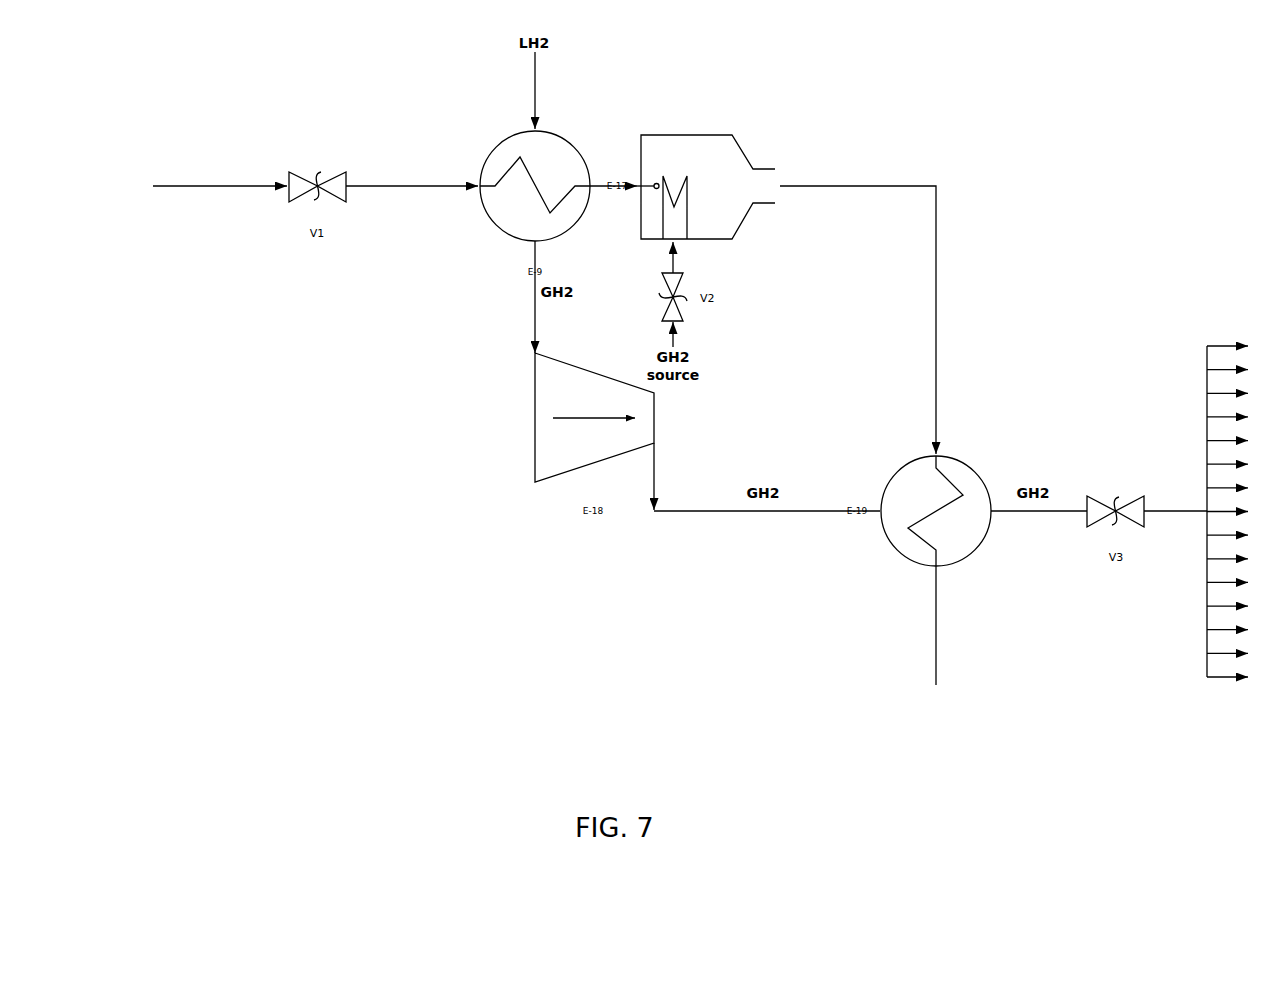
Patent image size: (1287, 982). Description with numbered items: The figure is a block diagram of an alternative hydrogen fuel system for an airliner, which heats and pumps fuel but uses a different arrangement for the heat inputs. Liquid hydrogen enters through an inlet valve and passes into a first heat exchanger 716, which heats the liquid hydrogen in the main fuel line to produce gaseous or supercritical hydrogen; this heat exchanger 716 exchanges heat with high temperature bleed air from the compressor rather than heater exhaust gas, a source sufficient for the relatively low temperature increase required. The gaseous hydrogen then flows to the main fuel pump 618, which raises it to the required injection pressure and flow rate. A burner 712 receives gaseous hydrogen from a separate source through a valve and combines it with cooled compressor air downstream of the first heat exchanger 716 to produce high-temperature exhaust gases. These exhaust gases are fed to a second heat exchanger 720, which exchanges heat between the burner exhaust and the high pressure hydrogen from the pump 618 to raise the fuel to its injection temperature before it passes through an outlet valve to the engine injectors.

The first heat exchanger 716 is at (507, 132).
The burner 712 is at (692, 130).
The second heat exchanger 720 is at (973, 467).
The main fuel pump 618 is at (534, 408).